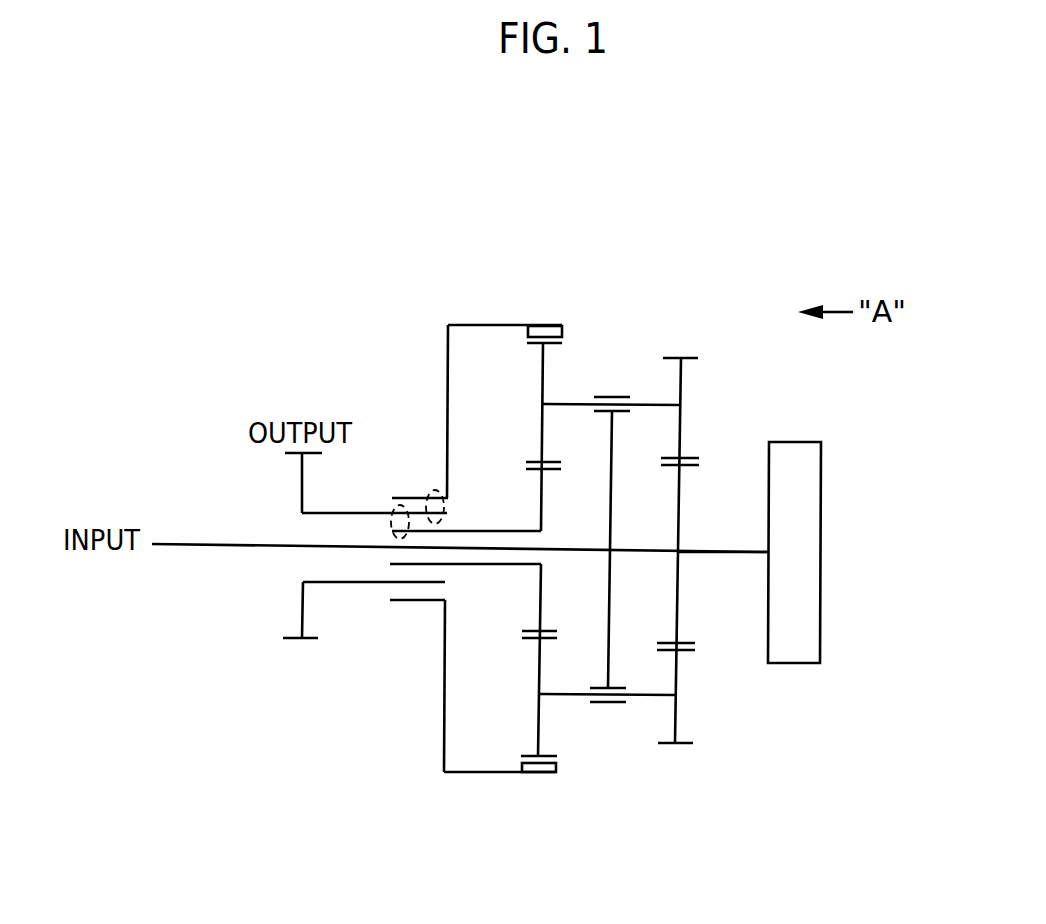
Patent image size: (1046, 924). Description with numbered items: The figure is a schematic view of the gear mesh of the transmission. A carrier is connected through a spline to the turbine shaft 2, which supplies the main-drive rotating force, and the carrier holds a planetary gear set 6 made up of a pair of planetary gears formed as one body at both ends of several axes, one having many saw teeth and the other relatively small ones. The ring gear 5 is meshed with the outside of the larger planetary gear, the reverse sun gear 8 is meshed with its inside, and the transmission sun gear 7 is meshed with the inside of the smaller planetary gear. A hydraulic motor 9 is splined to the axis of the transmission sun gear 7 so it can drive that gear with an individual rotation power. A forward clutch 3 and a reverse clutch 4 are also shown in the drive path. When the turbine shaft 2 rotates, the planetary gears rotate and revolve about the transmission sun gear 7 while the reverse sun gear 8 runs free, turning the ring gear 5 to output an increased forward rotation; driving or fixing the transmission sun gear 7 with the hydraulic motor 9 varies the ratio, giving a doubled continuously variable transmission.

The turbine shaft 2 is at (190, 544).
The forward clutch 3 is at (422, 497).
The reverse clutch 4 is at (392, 520).
The ring gear 5 is at (545, 333).
The planetary gear set 6 is at (543, 378).
The transmission sun gear 7 is at (677, 601).
The reverse sun gear 8 is at (541, 590).
The hydraulic motor 9 is at (808, 508).